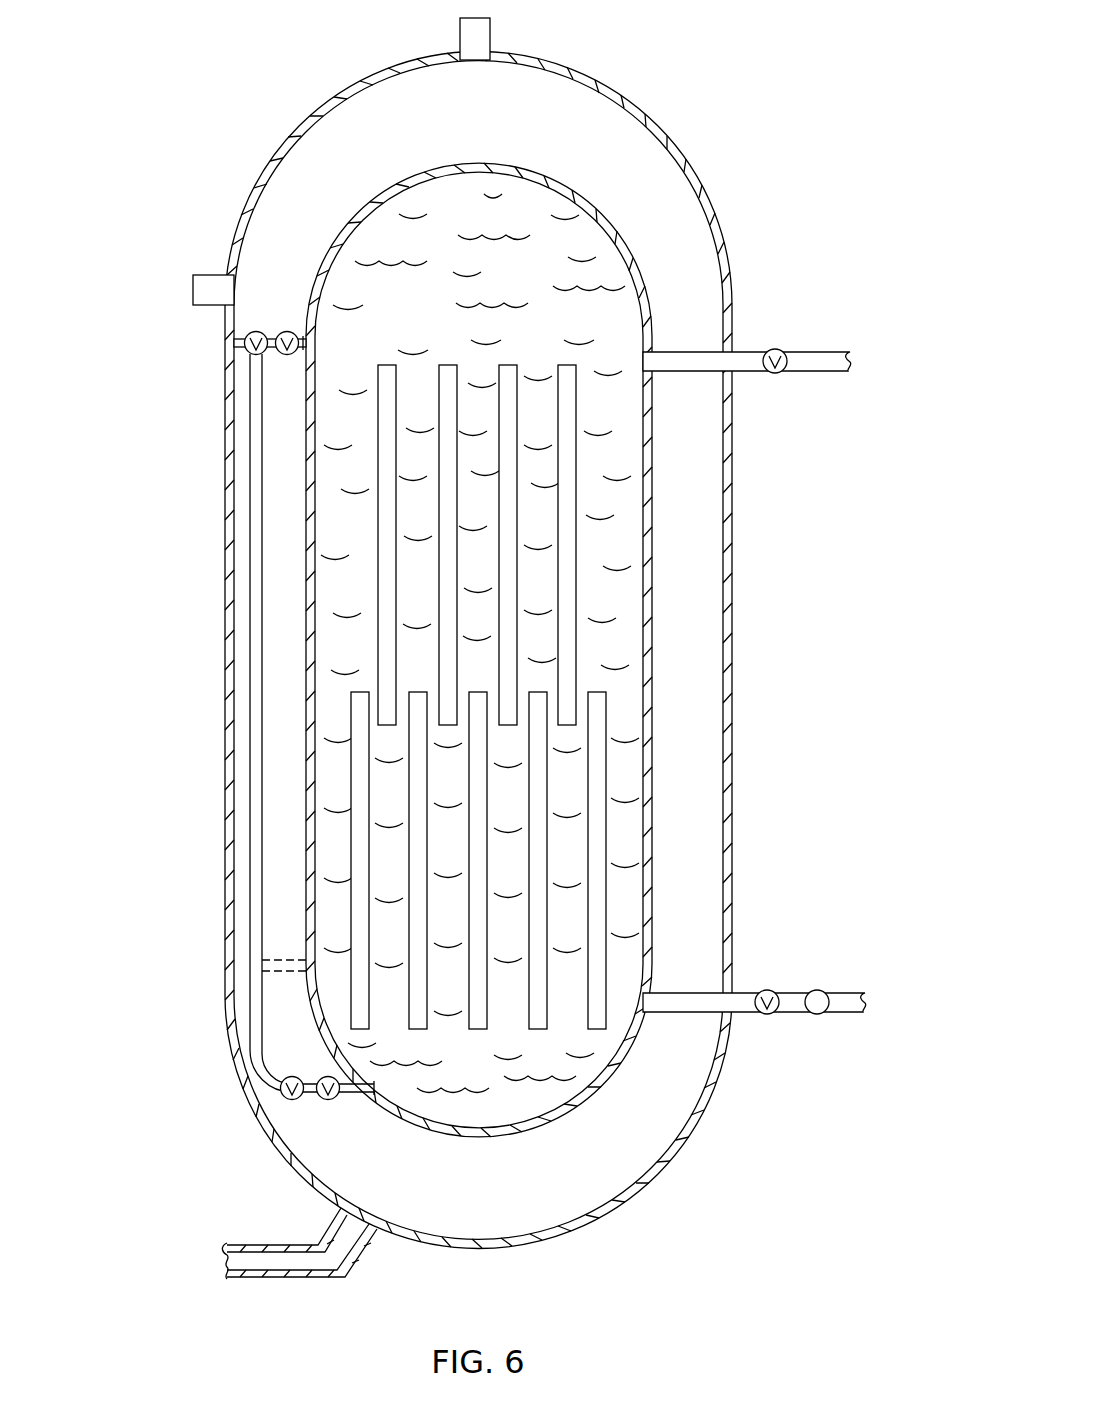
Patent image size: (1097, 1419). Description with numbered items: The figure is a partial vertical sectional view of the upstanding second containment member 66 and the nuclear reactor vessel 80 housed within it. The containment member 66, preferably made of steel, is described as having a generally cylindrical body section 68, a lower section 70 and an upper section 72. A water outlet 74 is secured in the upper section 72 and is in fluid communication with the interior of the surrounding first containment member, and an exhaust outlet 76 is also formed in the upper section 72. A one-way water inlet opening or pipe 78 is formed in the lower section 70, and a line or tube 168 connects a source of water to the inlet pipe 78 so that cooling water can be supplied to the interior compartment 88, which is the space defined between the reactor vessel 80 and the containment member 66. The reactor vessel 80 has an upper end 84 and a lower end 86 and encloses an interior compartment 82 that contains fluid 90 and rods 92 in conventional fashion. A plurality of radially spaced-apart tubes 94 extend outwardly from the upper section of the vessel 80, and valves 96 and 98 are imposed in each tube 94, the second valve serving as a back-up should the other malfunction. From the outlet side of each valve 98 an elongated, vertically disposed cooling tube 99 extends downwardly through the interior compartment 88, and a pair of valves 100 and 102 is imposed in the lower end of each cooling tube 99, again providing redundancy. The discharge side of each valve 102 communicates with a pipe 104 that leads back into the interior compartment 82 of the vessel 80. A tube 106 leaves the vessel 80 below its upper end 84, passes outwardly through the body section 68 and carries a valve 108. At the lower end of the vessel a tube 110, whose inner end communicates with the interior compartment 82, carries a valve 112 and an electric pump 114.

The second containment member 66 is at (524, 649).
The cylindrical body section 68 is at (732, 610).
The lower section 70 is at (660, 1186).
The upper section 72 is at (307, 113).
The water outlet 74 is at (202, 293).
The exhaust outlet 76 is at (486, 31).
The one-way water inlet opening or pipe 78 is at (349, 1246).
The nuclear reactor vessel 80 is at (655, 572).
The interior compartment 82 is at (636, 890).
The upper end 84 is at (481, 165).
The lower end 86 is at (523, 1134).
The interior compartment 88 is at (657, 245).
The fluid 90 is at (624, 752).
The rods 92 is at (601, 834).
The tubes 94 is at (308, 335).
The valve 96 is at (286, 331).
The valve 98 is at (246, 346).
The cooling tube 99 is at (254, 820).
The valve 100 is at (283, 1087).
The valve 102 is at (320, 1098).
The pipe 104 is at (352, 1093).
The tube 106 is at (815, 351).
The valve 108 is at (781, 374).
The tube 110 is at (836, 993).
The valve 112 is at (767, 1015).
The electric pump 114 is at (817, 1015).
The line or tube 168 is at (277, 1274).